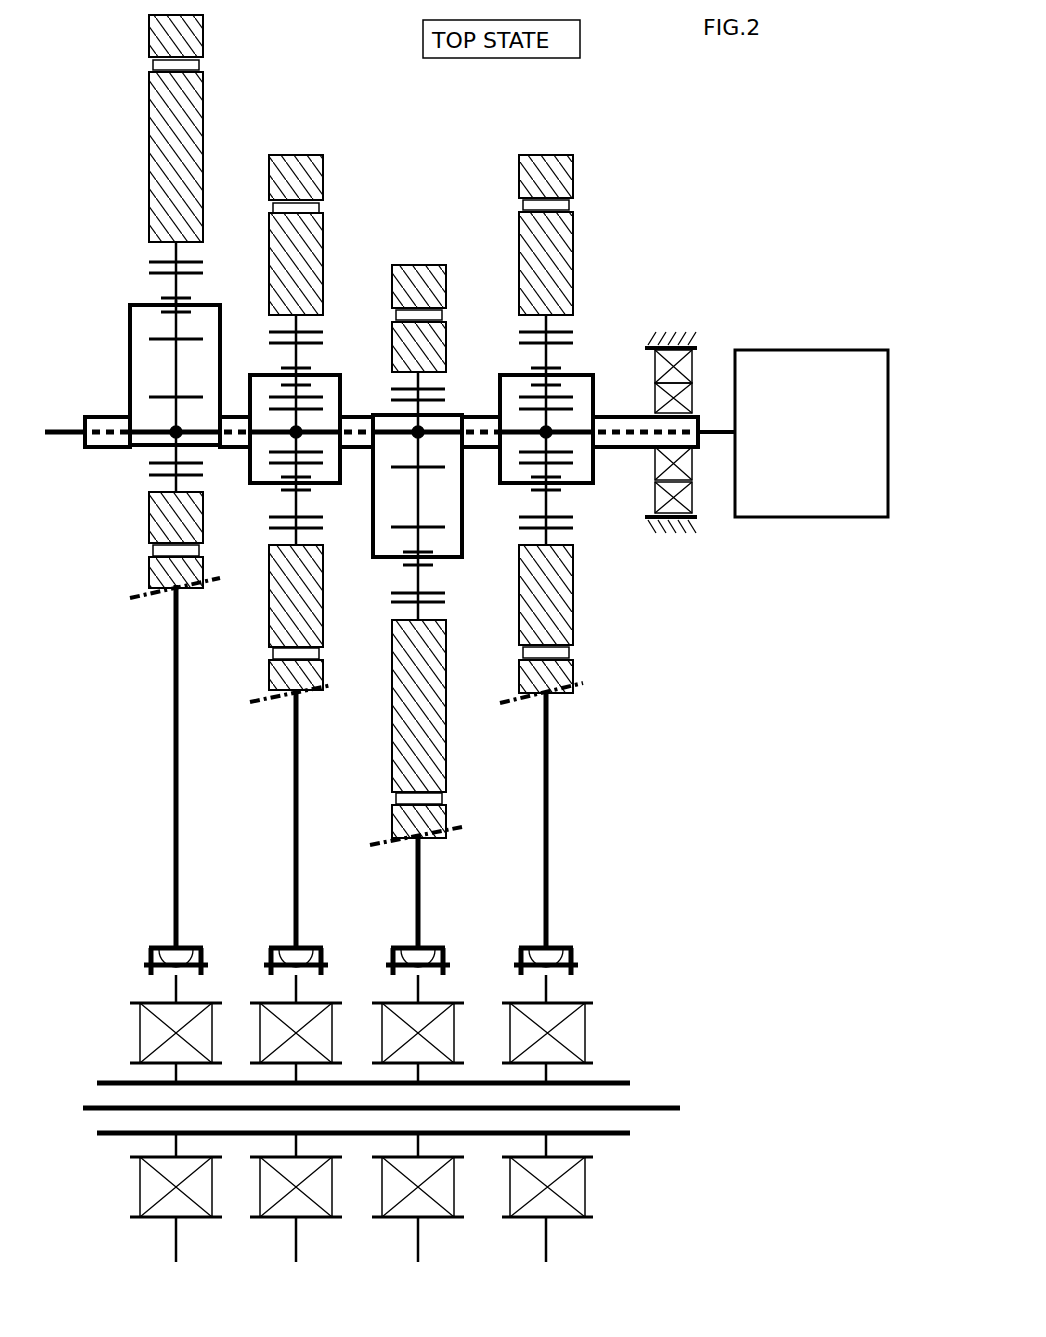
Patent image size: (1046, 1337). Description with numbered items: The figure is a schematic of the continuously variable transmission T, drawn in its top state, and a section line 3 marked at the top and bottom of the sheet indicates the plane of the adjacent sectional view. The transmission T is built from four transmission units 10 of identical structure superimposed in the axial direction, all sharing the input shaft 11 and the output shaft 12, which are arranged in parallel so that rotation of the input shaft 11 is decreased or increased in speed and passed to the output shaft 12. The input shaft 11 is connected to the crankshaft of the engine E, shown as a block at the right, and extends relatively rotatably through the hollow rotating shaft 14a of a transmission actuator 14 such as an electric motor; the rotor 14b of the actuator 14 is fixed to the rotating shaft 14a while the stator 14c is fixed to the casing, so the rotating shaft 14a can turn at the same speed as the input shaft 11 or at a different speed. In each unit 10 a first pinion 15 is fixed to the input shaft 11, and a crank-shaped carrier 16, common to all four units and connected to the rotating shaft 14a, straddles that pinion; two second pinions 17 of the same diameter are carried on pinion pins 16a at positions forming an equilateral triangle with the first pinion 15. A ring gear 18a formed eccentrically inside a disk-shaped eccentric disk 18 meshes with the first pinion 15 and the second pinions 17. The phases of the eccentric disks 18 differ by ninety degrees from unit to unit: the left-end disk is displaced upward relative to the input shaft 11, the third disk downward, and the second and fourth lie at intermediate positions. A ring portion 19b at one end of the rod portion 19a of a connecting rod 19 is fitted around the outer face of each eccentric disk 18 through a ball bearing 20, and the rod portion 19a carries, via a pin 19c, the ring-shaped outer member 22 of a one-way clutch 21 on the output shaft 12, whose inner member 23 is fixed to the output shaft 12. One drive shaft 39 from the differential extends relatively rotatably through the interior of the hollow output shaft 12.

The section line 3 is at (140, 5).
The engine E is at (819, 445).
The continuously variable transmission T is at (605, 783).
The transmission unit 10 is at (230, 86).
The input shaft 11 is at (718, 427).
The output shaft 12 is at (612, 1080).
The transmission actuator 14 is at (673, 451).
The rotating shaft 14a is at (630, 417).
The rotor 14b is at (692, 467).
The stator 14c is at (692, 362).
The first pinion 15 is at (185, 397).
The carrier 16 is at (340, 436).
The pinion pin 16a is at (138, 305).
The second pinion 17 is at (185, 345).
The eccentric disk 18 is at (148, 170).
The ring gear 18a is at (150, 268).
The connecting rod 19 is at (150, 580).
The rod portion 19a is at (172, 745).
The ring portion 19b is at (203, 37).
The pin 19c is at (165, 952).
The ball bearing 20 is at (172, 65).
The one-way clutch 21 is at (140, 1035).
The outer member 22 is at (195, 948).
The inner member 23 is at (173, 1148).
The drive shaft 39 is at (660, 1105).